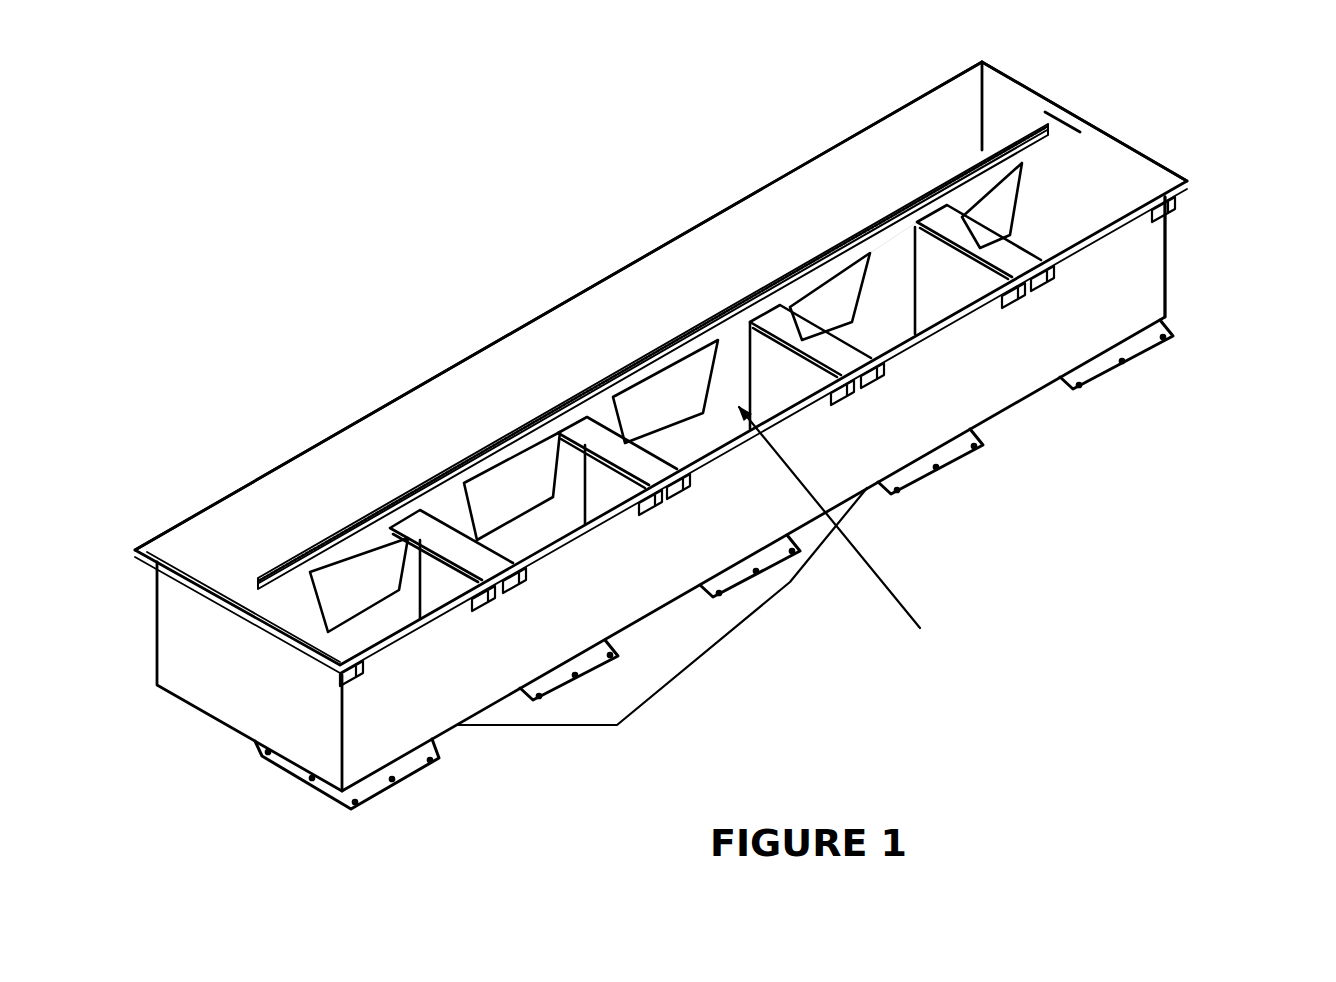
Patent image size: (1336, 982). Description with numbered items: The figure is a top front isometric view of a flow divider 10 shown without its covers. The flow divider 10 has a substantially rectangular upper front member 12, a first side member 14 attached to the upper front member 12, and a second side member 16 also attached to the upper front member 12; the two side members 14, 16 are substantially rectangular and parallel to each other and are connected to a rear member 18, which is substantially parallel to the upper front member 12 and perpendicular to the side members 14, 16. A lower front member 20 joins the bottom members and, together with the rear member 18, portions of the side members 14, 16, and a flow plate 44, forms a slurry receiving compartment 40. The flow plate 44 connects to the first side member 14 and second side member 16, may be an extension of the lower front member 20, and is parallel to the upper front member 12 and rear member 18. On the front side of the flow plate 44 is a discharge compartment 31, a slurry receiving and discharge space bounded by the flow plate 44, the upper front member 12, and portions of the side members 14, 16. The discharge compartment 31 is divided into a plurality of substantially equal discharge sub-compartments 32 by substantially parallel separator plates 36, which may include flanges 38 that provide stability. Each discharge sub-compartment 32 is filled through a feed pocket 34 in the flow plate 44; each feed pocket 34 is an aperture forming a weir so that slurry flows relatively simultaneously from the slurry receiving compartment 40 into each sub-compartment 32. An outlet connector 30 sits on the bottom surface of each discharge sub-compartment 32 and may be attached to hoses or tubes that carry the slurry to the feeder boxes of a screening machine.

The flow divider 10 is at (402, 322).
The upper front member 12 is at (1028, 368).
The first side member 14 is at (190, 646).
The second side member 16 is at (1170, 263).
The rear member 18 is at (453, 366).
The lower front member 20 is at (683, 657).
The outlet connector 30 is at (377, 786).
The discharge compartment 31 is at (843, 540).
The discharge sub-compartment 32 is at (430, 622).
The feed pocket 34 is at (350, 580).
The separator plate 36 is at (453, 577).
The flange 38 is at (433, 533).
The slurry receiving compartment 40 is at (668, 285).
The flow plate 44 is at (890, 270).